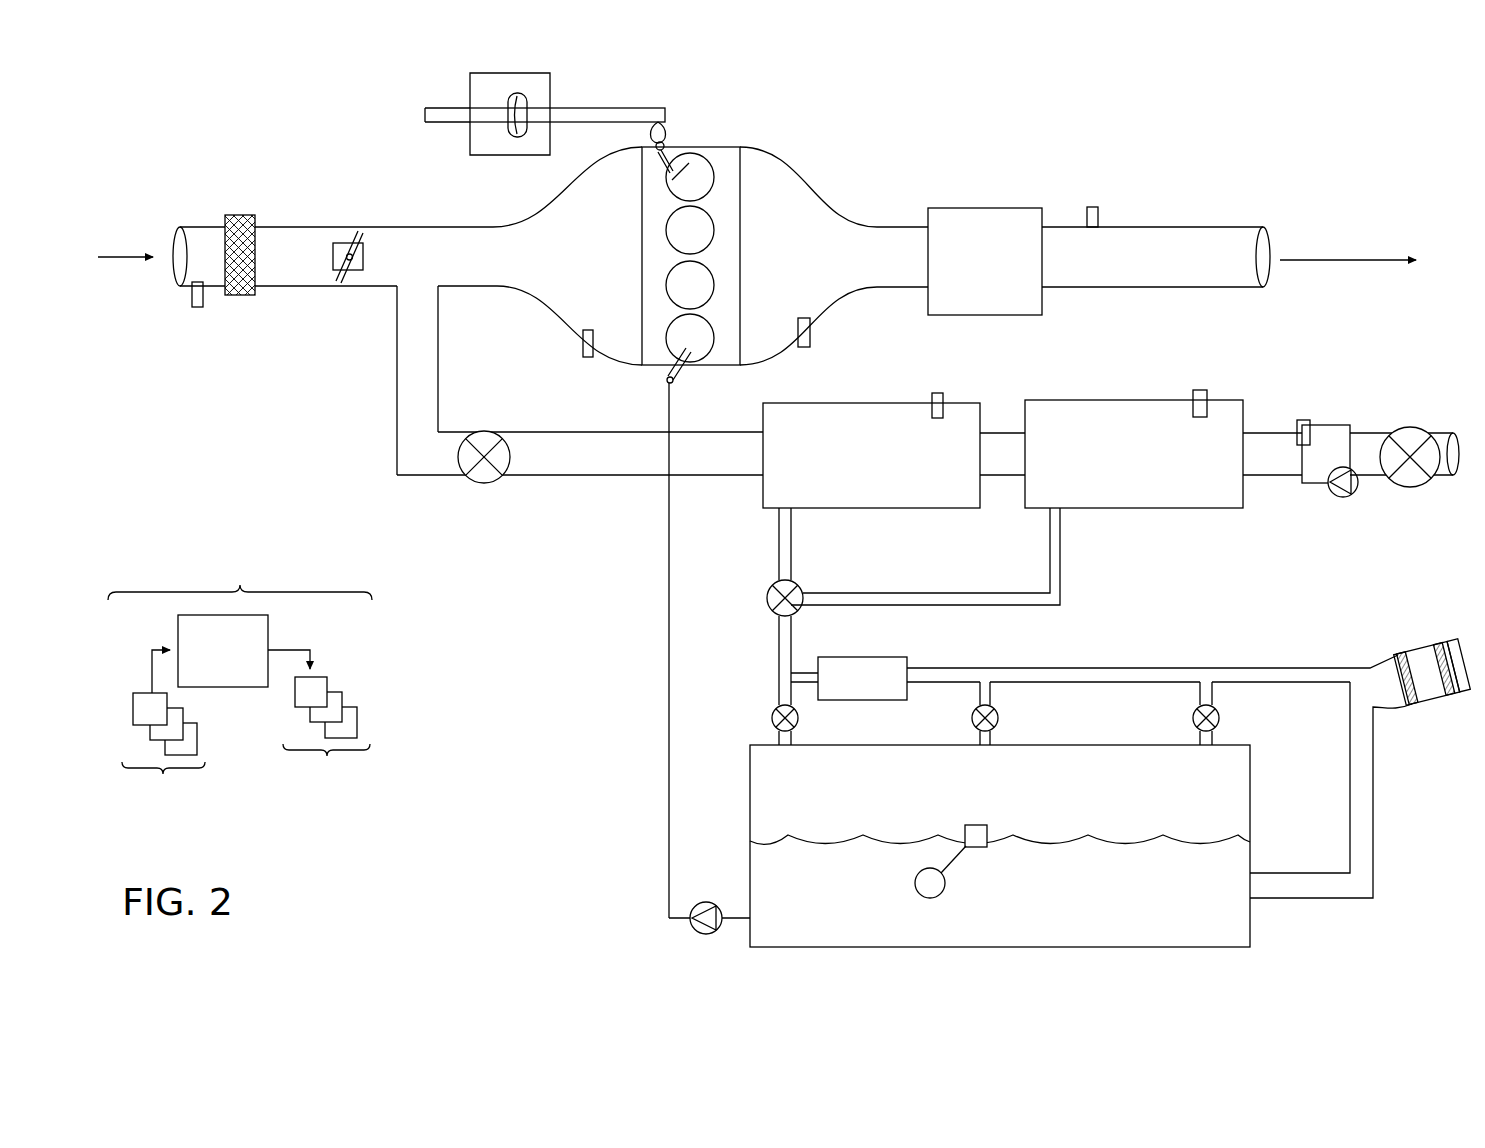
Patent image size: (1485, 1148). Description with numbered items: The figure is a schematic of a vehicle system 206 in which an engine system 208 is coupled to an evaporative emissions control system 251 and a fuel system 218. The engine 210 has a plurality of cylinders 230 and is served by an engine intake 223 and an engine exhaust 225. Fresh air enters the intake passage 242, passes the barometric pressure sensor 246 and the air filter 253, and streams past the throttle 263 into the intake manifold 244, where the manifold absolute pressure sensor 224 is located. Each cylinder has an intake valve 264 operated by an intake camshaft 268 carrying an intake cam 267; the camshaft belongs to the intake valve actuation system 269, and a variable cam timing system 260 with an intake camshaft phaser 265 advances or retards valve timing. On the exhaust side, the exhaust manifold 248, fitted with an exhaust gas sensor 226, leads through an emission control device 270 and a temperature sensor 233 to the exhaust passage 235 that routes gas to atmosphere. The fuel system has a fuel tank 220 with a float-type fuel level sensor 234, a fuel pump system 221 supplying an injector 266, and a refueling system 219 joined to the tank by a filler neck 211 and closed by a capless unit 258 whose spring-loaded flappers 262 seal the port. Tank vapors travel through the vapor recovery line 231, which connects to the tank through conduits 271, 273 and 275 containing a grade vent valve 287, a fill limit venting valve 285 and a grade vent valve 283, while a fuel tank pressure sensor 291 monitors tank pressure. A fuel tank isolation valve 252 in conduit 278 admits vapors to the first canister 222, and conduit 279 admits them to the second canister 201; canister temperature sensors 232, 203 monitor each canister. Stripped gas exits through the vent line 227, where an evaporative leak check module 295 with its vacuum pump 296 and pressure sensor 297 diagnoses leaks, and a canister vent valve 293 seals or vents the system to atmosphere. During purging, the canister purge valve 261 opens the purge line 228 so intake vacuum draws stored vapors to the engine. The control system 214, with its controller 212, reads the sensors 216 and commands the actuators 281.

The second fuel vapor canister 201 is at (1197, 508).
The canister temperature sensor 203 is at (1198, 390).
The vehicle system 206 is at (190, 145).
The engine system 208 is at (1058, 144).
The engine 210 is at (740, 285).
The fuel filler pipe or neck 211 is at (1375, 790).
The controller 212 is at (206, 661).
The control system 214 is at (240, 570).
The sensors 216 is at (163, 755).
The fuel system 218 is at (1398, 897).
The fuel filler system 219 is at (1426, 626).
The fuel tank 220 is at (1250, 800).
The fuel pump system 221 is at (703, 902).
The first fuel vapor canister 222 is at (935, 508).
The engine intake 223 is at (482, 196).
The manifold absolute pressure sensor 224 is at (583, 335).
The engine exhaust 225 is at (919, 155).
The exhaust gas sensor 226 is at (810, 330).
The vent line 227 is at (626, 466).
The purge line 228 is at (400, 383).
The cylinders 230 is at (714, 172).
The vapor recovery line 231 is at (1268, 668).
The canister temperature sensor 232 is at (937, 393).
The temperature sensor 233 is at (1087, 218).
The fuel level sensor 234 is at (975, 825).
The exhaust passage 235 is at (1215, 227).
The intake passage 242 is at (308, 287).
The intake manifold 244 is at (566, 268).
The barometric pressure sensor 246 is at (198, 307).
The exhaust manifold 248 is at (796, 268).
The evaporative emissions control system 251 is at (1300, 364).
The fuel tank isolation valve 252 is at (767, 598).
The air filter 253 is at (243, 215).
The capless unit 258 is at (1458, 640).
The variable cam timing system 260 is at (550, 83).
The canister purge valve 261 is at (485, 431).
The flappers 262 is at (1397, 655).
The throttle 263 is at (363, 265).
The intake valve 264 is at (663, 155).
The intake camshaft phaser 265 is at (513, 137).
The fuel injector 266 is at (678, 370).
The intake cam 267 is at (668, 137).
The intake camshaft 268 is at (614, 107).
The intake valve actuation system 269 is at (425, 98).
The emission control device 270 is at (972, 208).
The conduit 271 is at (793, 698).
The conduit 273 is at (978, 690).
The conduit 275 is at (1198, 690).
The conduit 278 is at (791, 560).
The conduit 279 is at (922, 593).
The actuators 281 is at (326, 740).
The grade vent valve 283 is at (1220, 722).
The fill limit venting valve 285 is at (998, 718).
The grade vent valve 287 is at (770, 718).
The fuel tank pressure sensor 291 is at (872, 657).
The canister vent valve 293 is at (1415, 427).
The evaporative leak check module 295 is at (1328, 425).
The vacuum pump 296 is at (1357, 490).
The ELCM pressure sensor 297 is at (1300, 420).